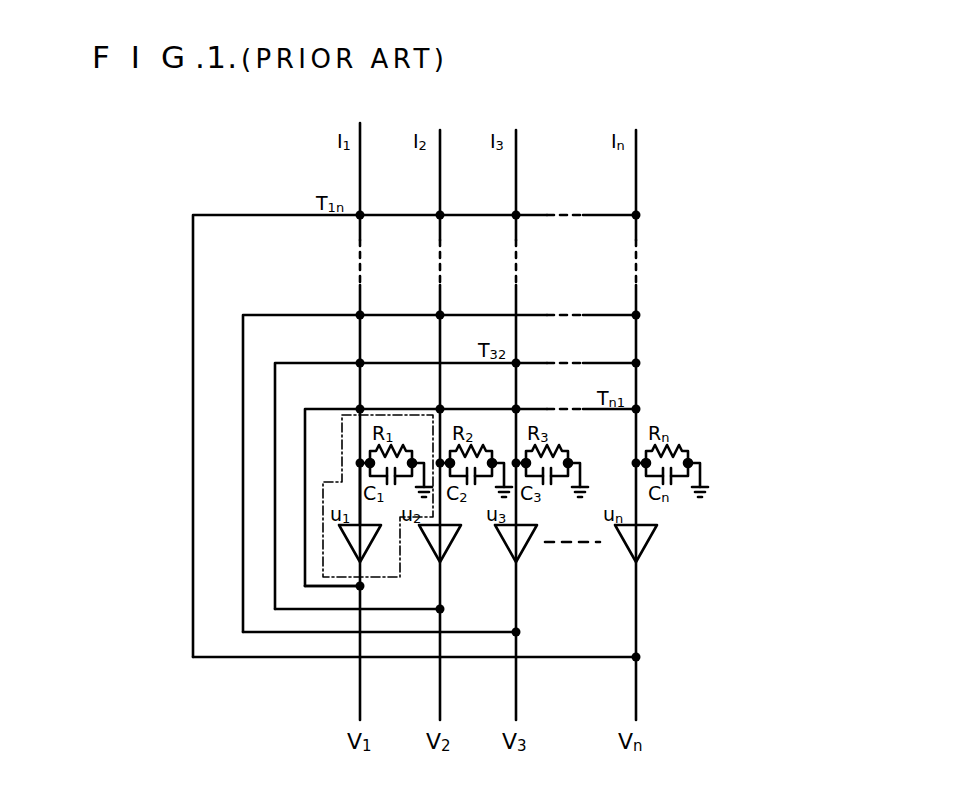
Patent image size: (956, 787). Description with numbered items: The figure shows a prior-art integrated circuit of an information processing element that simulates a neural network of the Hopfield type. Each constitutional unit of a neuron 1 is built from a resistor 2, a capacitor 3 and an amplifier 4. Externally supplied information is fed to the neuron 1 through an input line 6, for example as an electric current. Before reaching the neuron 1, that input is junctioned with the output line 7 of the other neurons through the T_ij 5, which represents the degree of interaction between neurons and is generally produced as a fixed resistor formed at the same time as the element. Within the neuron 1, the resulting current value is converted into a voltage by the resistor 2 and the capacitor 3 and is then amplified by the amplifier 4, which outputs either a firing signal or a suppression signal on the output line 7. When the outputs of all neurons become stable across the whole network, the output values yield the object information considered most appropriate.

The constitutional unit of a neuron 1 is at (393, 567).
The resistor 2 is at (378, 446).
The capacitor 3 is at (365, 478).
The amplifier 4 is at (345, 543).
The T_ij 5 is at (359, 213).
The input line 6 is at (361, 127).
The output line 7 is at (633, 755).